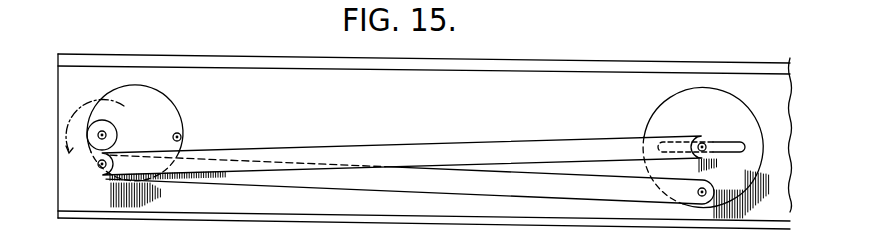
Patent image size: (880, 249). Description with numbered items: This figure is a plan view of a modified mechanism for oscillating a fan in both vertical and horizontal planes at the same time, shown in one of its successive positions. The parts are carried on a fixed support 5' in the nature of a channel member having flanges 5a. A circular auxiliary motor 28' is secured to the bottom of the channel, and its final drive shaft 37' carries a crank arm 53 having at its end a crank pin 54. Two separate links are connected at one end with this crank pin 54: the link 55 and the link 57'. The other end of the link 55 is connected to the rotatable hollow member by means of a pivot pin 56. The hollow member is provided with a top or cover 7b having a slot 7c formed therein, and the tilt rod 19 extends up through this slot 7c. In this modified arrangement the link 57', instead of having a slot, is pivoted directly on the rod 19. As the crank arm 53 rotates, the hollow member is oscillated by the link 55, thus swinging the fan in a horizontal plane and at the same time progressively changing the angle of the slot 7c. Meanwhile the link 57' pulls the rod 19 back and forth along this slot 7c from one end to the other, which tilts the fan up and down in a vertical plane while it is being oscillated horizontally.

The fixed support 5' is at (425, 151).
The flanges 5a is at (403, 69).
The crank arm 53 is at (92, 157).
The final drive shaft 37' is at (113, 125).
The auxiliary motor 28' is at (206, 124).
The link 57' is at (402, 144).
The link 55 is at (510, 182).
The crank pin 54 is at (102, 168).
The top or cover 7b is at (730, 108).
The slot 7c is at (735, 129).
The tilt rod 19 is at (702, 143).
The pivot pin 56 is at (702, 197).